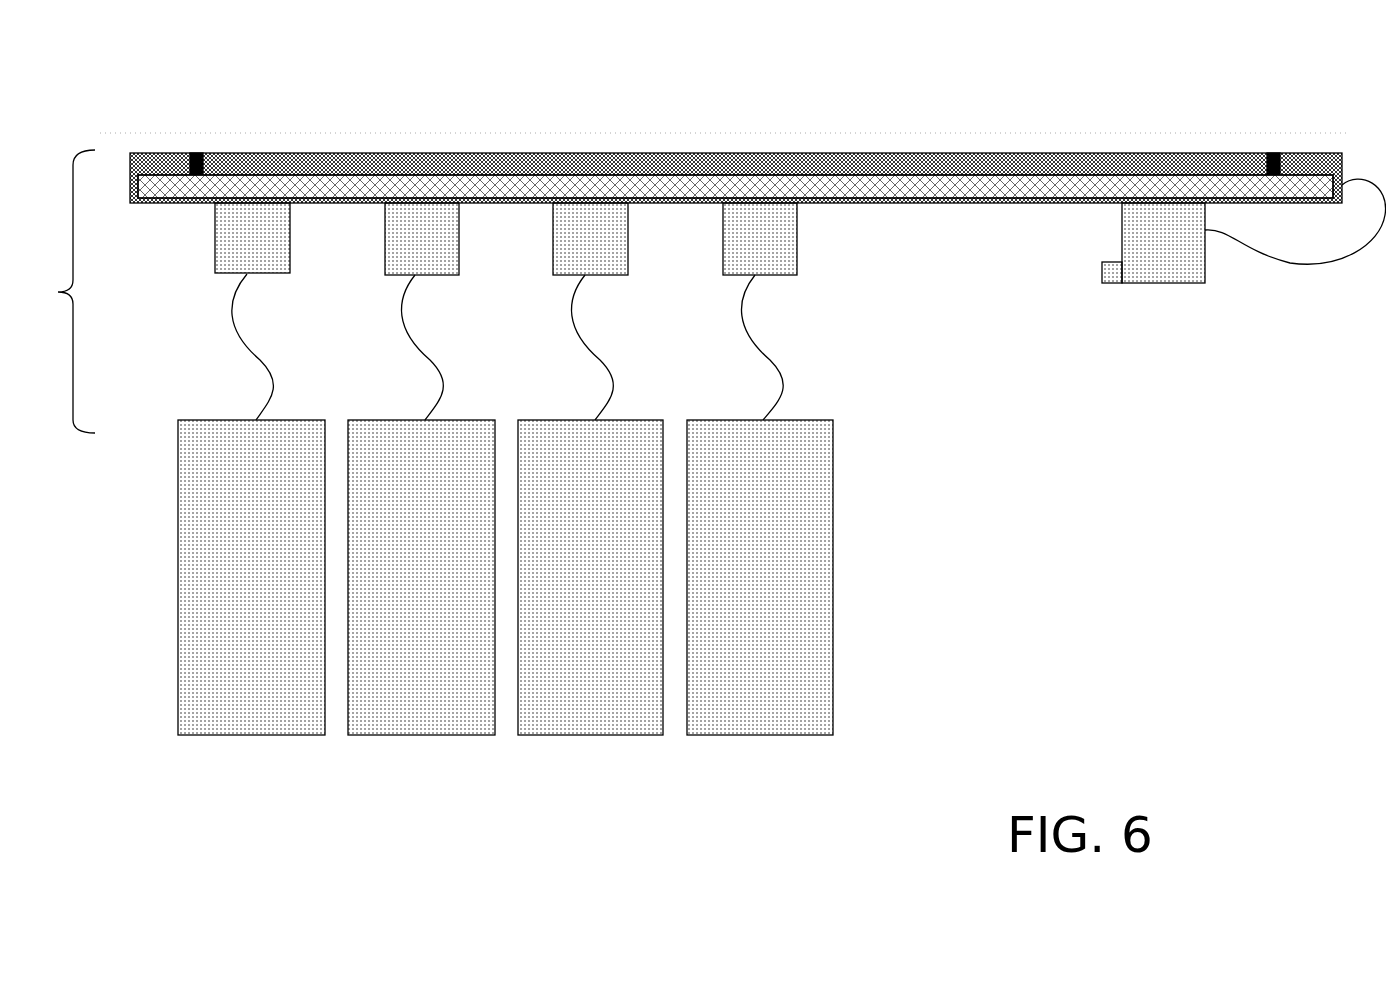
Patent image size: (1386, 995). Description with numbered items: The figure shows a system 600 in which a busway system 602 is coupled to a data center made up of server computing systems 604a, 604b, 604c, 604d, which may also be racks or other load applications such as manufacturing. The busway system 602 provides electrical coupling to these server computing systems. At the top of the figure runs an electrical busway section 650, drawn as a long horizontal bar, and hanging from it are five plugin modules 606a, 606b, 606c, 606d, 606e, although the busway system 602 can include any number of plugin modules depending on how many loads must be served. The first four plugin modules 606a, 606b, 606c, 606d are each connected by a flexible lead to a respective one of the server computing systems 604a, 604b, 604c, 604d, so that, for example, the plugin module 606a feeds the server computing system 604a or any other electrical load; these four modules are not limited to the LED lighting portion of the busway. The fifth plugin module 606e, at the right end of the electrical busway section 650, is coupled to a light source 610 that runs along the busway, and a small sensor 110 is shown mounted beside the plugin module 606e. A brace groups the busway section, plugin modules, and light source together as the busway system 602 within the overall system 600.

The system 600 is at (137, 107).
The busway system 602 is at (55, 291).
The electrical busway section 650 is at (503, 166).
The light source 610 is at (637, 184).
The plugin module 606a is at (209, 268).
The plugin module 606b is at (388, 277).
The plugin module 606c is at (555, 277).
The plugin module 606d is at (725, 277).
The plugin module 606e is at (1158, 284).
The sensor 110 is at (1099, 278).
The server computing system 604a is at (253, 737).
The server computing system 604b is at (418, 737).
The server computing system 604c is at (588, 737).
The server computing system 604d is at (758, 737).